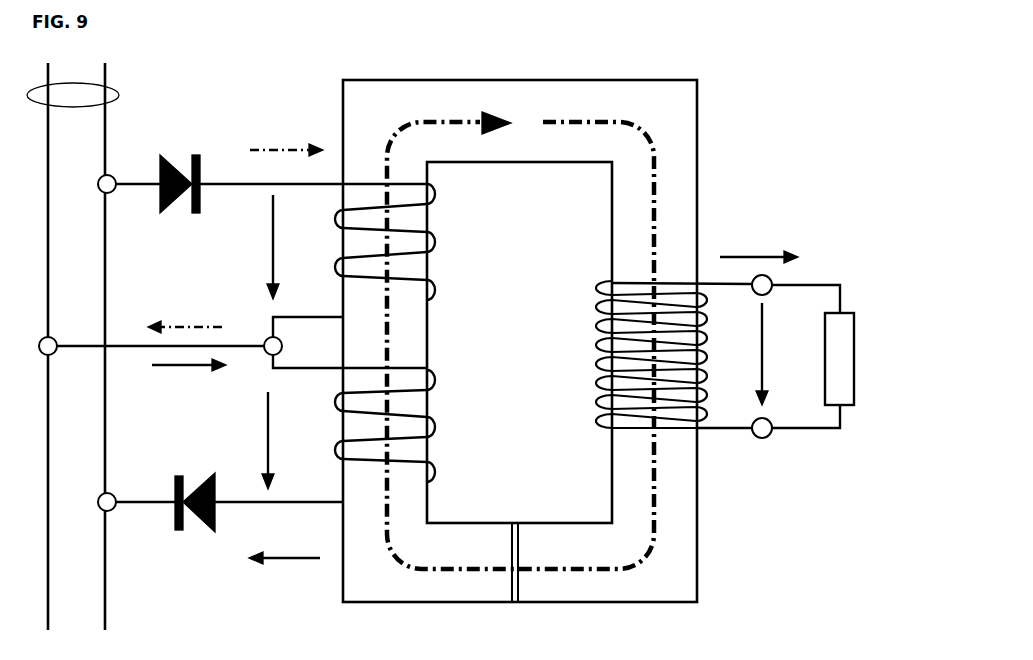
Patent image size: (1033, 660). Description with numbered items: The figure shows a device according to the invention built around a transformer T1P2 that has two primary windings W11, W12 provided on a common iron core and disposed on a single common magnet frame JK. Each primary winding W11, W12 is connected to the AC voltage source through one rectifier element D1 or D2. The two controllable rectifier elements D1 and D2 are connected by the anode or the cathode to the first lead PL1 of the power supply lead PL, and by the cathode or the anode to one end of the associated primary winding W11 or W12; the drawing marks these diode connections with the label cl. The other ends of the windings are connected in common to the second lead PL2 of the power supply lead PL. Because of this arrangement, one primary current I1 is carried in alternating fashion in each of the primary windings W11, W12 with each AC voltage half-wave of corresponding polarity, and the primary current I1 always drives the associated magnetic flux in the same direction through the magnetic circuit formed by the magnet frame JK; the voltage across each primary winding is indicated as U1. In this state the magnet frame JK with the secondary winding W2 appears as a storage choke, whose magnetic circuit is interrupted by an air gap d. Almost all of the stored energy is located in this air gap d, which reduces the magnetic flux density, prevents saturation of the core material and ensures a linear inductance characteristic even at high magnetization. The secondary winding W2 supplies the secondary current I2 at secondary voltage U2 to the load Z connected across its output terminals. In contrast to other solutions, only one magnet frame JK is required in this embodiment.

The power supply lead PL is at (119, 91).
The first lead PL1 is at (105, 558).
The second lead PL2 is at (48, 558).
The rectifier element D1 is at (262, 208).
The rectifier element D2 is at (220, 524).
The diode cathode/contact cl is at (187, 298).
The primary current I1 is at (286, 344).
The primary voltage U1 is at (284, 342).
The primary winding W11 is at (414, 242).
The primary winding W12 is at (414, 426).
The secondary winding W2 is at (650, 354).
The transformer T1P2 is at (645, 79).
The magnet frame JK is at (688, 560).
The air gap d is at (512, 603).
The secondary current I2 is at (759, 247).
The secondary voltage U2 is at (774, 354).
The load impedance Z is at (813, 380).